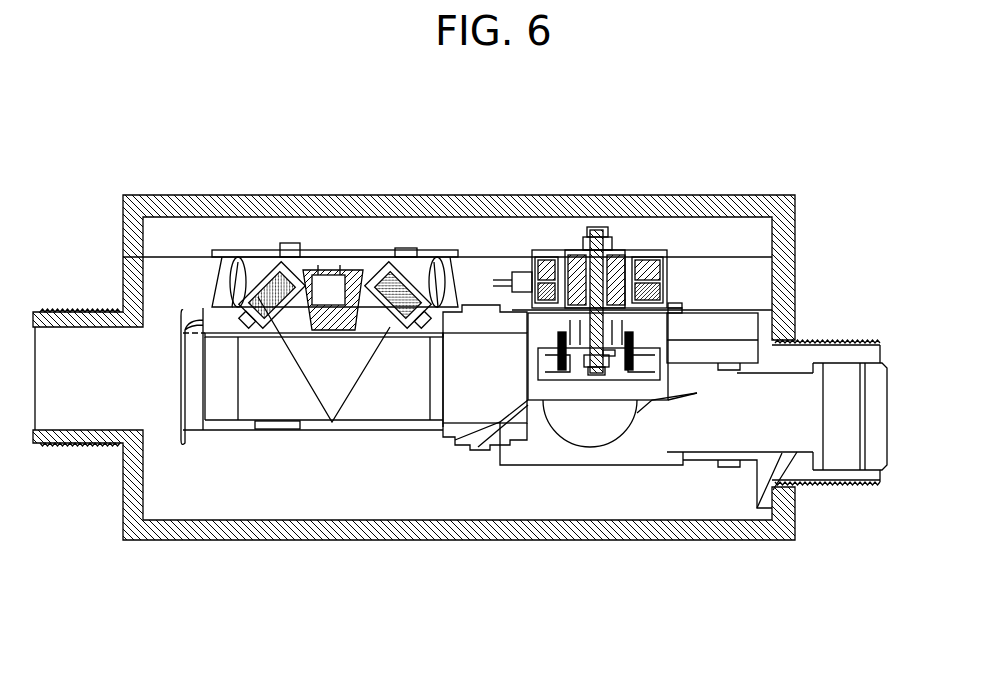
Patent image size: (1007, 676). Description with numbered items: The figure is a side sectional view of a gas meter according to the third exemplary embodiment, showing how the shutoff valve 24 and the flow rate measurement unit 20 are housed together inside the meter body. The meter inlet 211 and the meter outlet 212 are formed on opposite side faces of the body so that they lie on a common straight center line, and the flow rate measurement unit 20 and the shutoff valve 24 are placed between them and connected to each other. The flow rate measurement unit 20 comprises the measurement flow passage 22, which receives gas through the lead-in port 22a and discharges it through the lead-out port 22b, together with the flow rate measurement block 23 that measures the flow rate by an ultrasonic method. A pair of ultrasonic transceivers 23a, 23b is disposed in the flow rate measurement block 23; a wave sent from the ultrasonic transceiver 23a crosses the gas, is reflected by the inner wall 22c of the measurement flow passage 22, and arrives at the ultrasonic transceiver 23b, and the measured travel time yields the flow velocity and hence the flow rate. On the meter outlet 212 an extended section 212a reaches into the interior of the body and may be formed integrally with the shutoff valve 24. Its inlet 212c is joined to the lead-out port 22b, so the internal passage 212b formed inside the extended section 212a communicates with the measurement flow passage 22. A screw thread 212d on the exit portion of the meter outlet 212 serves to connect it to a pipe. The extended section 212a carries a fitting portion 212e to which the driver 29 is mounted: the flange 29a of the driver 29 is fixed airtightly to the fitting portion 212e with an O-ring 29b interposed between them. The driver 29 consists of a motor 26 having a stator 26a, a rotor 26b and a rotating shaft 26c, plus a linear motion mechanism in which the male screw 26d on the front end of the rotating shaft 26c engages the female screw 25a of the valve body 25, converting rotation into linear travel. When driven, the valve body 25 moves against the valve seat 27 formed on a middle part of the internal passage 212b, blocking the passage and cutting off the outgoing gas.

The flow rate measurement unit 20 is at (375, 447).
The meter inlet 211 is at (72, 310).
The meter outlet 212 is at (691, 469).
The extended section 212a is at (703, 462).
The internal passage 212b is at (605, 432).
The inlet of extended section 212c is at (504, 422).
The screw thread 212d is at (845, 357).
The fitting portion 212e is at (680, 340).
The measurement flow passage 22 is at (293, 354).
The lead-in port 22a is at (193, 412).
The lead-out port 22b is at (452, 448).
The inner wall 22c is at (295, 423).
The flow rate measurement block 23 is at (329, 240).
The ultrasonic transceiver 23a is at (263, 277).
The ultrasonic transceiver 23b is at (408, 273).
The shutoff valve 24 is at (638, 453).
The valve body 25 is at (565, 375).
The female screw 25a is at (608, 353).
The motor 26 is at (669, 374).
The stator 26a is at (645, 308).
The rotor 26b is at (640, 275).
The rotating shaft 26c is at (590, 265).
The male screw 26d is at (597, 357).
The valve seat 27 is at (533, 325).
The driver 29 is at (587, 233).
The flange 29a is at (680, 310).
The O-ring 29b is at (684, 308).